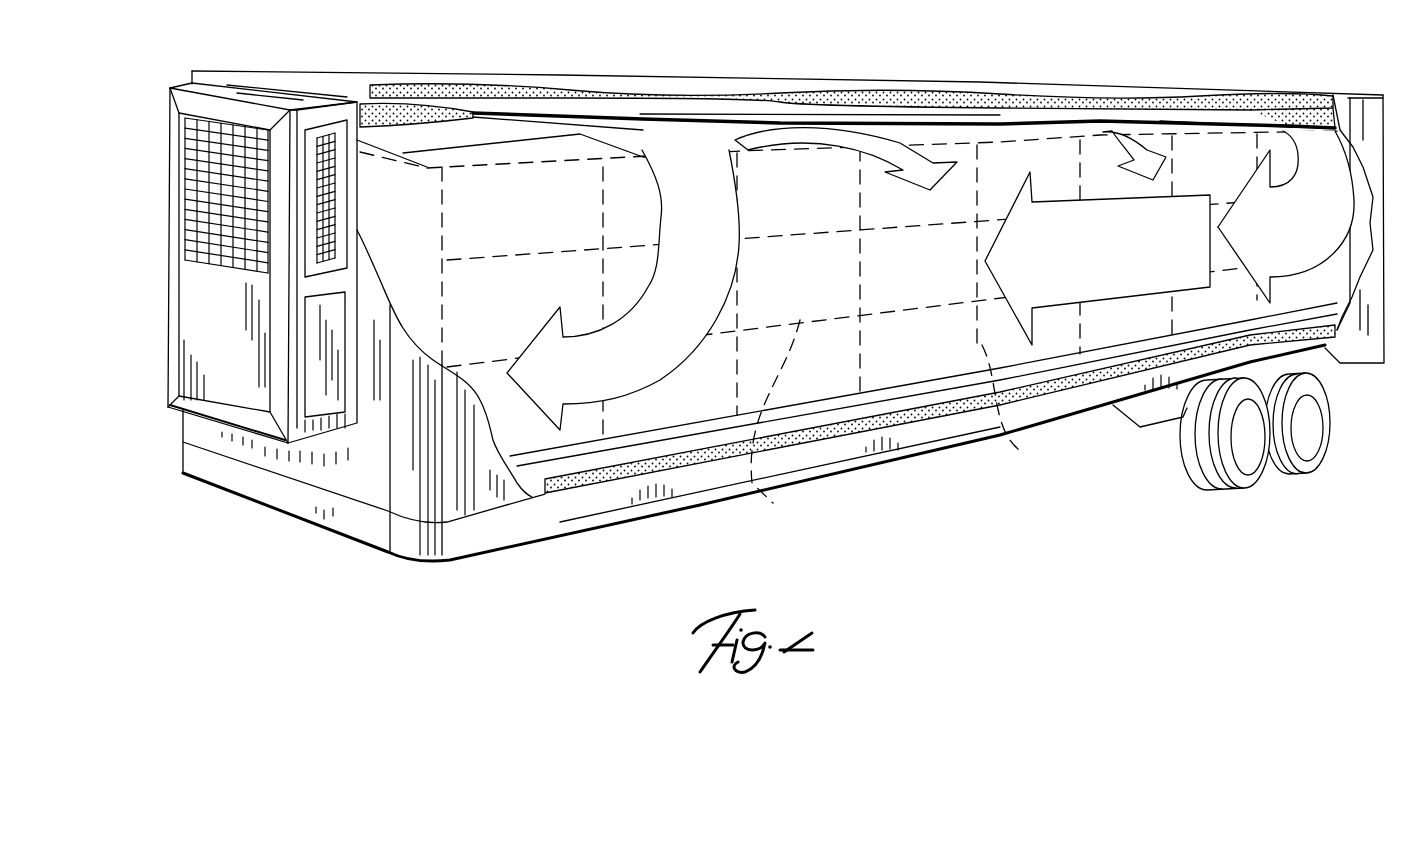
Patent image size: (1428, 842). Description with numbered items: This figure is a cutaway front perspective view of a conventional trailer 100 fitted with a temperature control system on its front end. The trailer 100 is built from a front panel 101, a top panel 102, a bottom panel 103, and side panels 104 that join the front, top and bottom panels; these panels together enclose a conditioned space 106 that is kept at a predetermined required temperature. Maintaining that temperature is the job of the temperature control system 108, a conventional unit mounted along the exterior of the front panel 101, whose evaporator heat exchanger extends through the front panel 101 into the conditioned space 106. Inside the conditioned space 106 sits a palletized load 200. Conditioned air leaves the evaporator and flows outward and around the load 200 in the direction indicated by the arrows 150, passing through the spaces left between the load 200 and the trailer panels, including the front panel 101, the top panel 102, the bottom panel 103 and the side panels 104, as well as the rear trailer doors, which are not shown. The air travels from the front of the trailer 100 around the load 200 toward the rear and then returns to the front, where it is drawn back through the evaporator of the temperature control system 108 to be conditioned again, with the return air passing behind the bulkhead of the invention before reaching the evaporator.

The trailer 100 is at (383, 590).
The front panel 101 is at (253, 443).
The top panel 102 is at (350, 78).
The bottom panel 103 is at (928, 452).
The side panel 104 is at (507, 480).
The conditioned space 106 is at (1183, 100).
The temperature control system 108 is at (200, 362).
The arrows 150 is at (692, 168).
The palletized load 200 is at (911, 421).